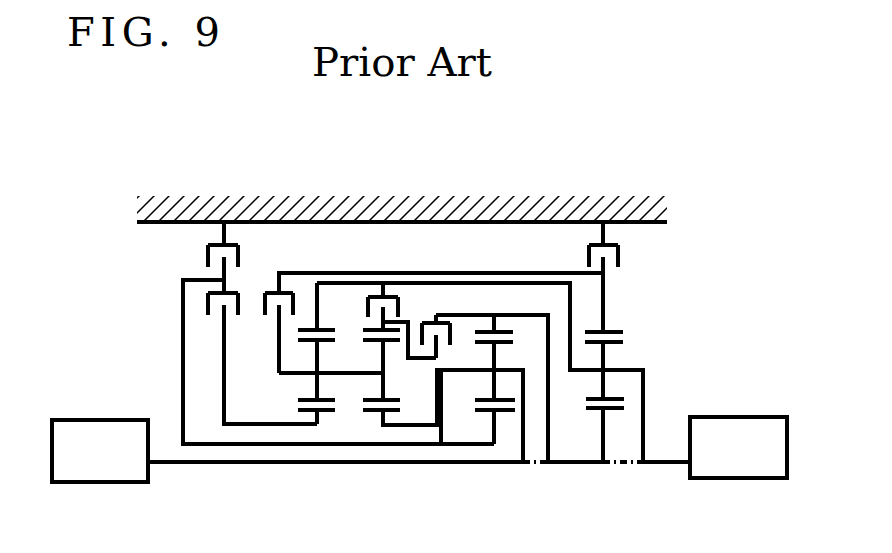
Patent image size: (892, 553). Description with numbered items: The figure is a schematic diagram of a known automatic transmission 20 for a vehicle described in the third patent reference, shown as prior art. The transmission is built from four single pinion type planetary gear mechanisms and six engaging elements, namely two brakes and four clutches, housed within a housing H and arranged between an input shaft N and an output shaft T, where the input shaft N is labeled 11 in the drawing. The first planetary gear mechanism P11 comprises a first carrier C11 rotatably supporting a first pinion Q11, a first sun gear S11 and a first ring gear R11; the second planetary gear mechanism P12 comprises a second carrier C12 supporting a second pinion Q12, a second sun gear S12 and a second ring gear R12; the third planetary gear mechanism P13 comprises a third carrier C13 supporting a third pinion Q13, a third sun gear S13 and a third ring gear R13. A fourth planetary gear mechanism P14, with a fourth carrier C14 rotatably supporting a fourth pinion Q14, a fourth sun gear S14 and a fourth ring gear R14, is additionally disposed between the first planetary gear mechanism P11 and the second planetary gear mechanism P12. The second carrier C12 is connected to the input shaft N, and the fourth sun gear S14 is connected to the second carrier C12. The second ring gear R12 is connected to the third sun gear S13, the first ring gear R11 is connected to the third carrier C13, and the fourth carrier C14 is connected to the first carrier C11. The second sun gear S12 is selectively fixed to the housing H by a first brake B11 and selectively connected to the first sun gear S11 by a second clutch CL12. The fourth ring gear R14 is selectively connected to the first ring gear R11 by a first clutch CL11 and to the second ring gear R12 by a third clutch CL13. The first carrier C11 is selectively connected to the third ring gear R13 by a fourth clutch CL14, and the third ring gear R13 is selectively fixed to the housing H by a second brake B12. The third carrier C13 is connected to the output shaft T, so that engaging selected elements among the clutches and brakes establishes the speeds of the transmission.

The automatic transmission for vehicle 20 is at (500, 172).
The housing H is at (387, 212).
The first brake B11 is at (195, 256).
The second brake B12 is at (632, 256).
The first clutch CL11 is at (361, 290).
The second clutch CL12 is at (195, 303).
The third clutch CL13 is at (432, 314).
The fourth clutch CL14 is at (266, 280).
The first planetary gear mechanism P11 is at (327, 422).
The second planetary gear mechanism P12 is at (507, 430).
The third planetary gear mechanism P13 is at (620, 430).
The fourth planetary gear mechanism P14 is at (392, 422).
The first ring gear R11 is at (327, 318).
The second ring gear R12 is at (497, 323).
The third ring gear R13 is at (610, 332).
The fourth ring gear R14 is at (399, 328).
The first carrier C11 is at (304, 374).
The second carrier C12 is at (497, 351).
The third carrier C13 is at (636, 370).
The fourth carrier C14 is at (378, 374).
The first sun gear S11 is at (316, 419).
The second sun gear S12 is at (493, 425).
The third sun gear S13 is at (603, 421).
The fourth sun gear S14 is at (382, 418).
The first pinion Q11 is at (317, 357).
The second pinion Q12 is at (492, 388).
The third pinion Q13 is at (601, 387).
The fourth pinion Q14 is at (383, 383).
The input shaft 11 is at (213, 464).
The input shaft N is at (95, 483).
The output shaft T is at (722, 479).